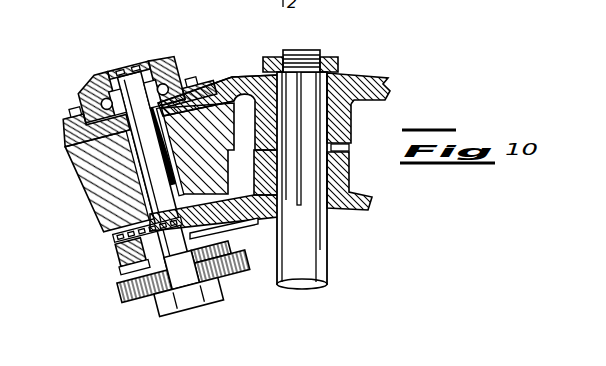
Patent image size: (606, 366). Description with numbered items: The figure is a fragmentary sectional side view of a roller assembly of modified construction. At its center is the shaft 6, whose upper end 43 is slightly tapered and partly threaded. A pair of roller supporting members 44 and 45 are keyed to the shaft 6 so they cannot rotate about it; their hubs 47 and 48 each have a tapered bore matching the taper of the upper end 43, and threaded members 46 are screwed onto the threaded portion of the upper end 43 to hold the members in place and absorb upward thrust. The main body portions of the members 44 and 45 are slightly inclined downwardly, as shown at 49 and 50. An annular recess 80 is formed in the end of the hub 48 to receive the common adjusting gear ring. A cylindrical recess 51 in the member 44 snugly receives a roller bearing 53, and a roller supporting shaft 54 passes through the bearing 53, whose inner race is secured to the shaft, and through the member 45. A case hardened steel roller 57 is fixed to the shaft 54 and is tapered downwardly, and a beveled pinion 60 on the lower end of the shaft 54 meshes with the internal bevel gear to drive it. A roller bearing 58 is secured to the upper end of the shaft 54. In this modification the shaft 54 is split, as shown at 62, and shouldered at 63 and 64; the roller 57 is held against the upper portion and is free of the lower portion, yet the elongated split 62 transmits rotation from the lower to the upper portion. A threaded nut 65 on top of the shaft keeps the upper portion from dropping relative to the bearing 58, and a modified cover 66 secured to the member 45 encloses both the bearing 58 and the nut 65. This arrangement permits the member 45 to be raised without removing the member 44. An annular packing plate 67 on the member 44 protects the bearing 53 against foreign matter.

The shaft 6 is at (323, 258).
The upper end of shaft 43 is at (347, 73).
The roller supporting member 44 is at (342, 171).
The roller supporting member 45 is at (240, 77).
The threaded members 46 is at (334, 57).
The hub 47 is at (262, 169).
The hub 48 is at (340, 127).
The inclined body portion 49 is at (252, 203).
The inclined body portion 50 is at (210, 84).
The cylindrical recess 51 is at (237, 237).
The roller bearing 53 is at (128, 263).
The roller supporting shaft 54 is at (75, 162).
The roller 57 is at (72, 156).
The roller bearing 58 is at (178, 68).
The beveled pinion 60 is at (157, 302).
The split 62 is at (132, 200).
The shoulder 63 is at (136, 96).
The shoulder 64 is at (125, 265).
The threaded nut 65 is at (115, 74).
The modified cover 66 is at (98, 76).
The annular packing plate 67 is at (118, 240).
The annular recess 80 is at (350, 148).